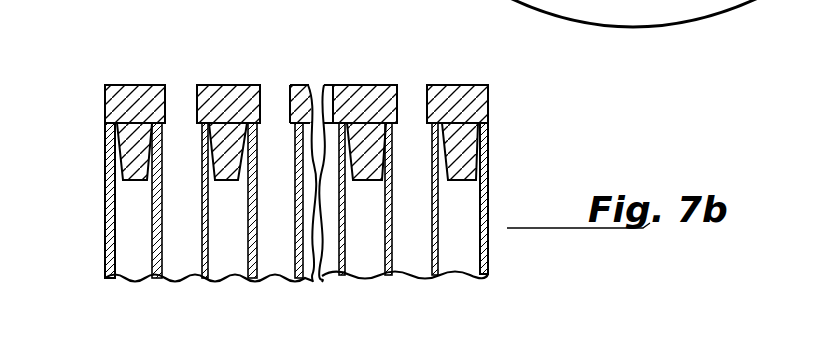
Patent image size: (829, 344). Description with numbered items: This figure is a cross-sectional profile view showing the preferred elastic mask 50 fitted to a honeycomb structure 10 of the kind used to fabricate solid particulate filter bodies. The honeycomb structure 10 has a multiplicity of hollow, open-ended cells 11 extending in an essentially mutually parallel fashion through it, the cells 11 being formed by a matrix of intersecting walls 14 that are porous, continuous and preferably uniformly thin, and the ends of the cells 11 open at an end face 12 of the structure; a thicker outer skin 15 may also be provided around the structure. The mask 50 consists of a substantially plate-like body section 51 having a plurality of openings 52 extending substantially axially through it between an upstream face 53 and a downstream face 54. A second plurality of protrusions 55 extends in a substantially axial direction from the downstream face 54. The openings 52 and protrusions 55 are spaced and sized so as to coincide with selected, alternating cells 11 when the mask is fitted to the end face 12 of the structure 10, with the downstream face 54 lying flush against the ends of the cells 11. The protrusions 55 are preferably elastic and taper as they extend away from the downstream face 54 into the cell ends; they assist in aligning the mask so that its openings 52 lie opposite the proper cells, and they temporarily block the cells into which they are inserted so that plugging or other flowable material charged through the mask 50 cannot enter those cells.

The honeycomb structure 10 is at (327, 208).
The cells 11 is at (368, 258).
The end face 12 is at (105, 118).
The walls 14 is at (252, 262).
The skin 15 is at (108, 218).
The elastic mask 50 is at (331, 108).
The body section 51 is at (105, 100).
The openings 52 is at (184, 100).
The upstream face 53 is at (308, 85).
The downstream face 54 is at (275, 148).
The protrusions 55 is at (365, 145).